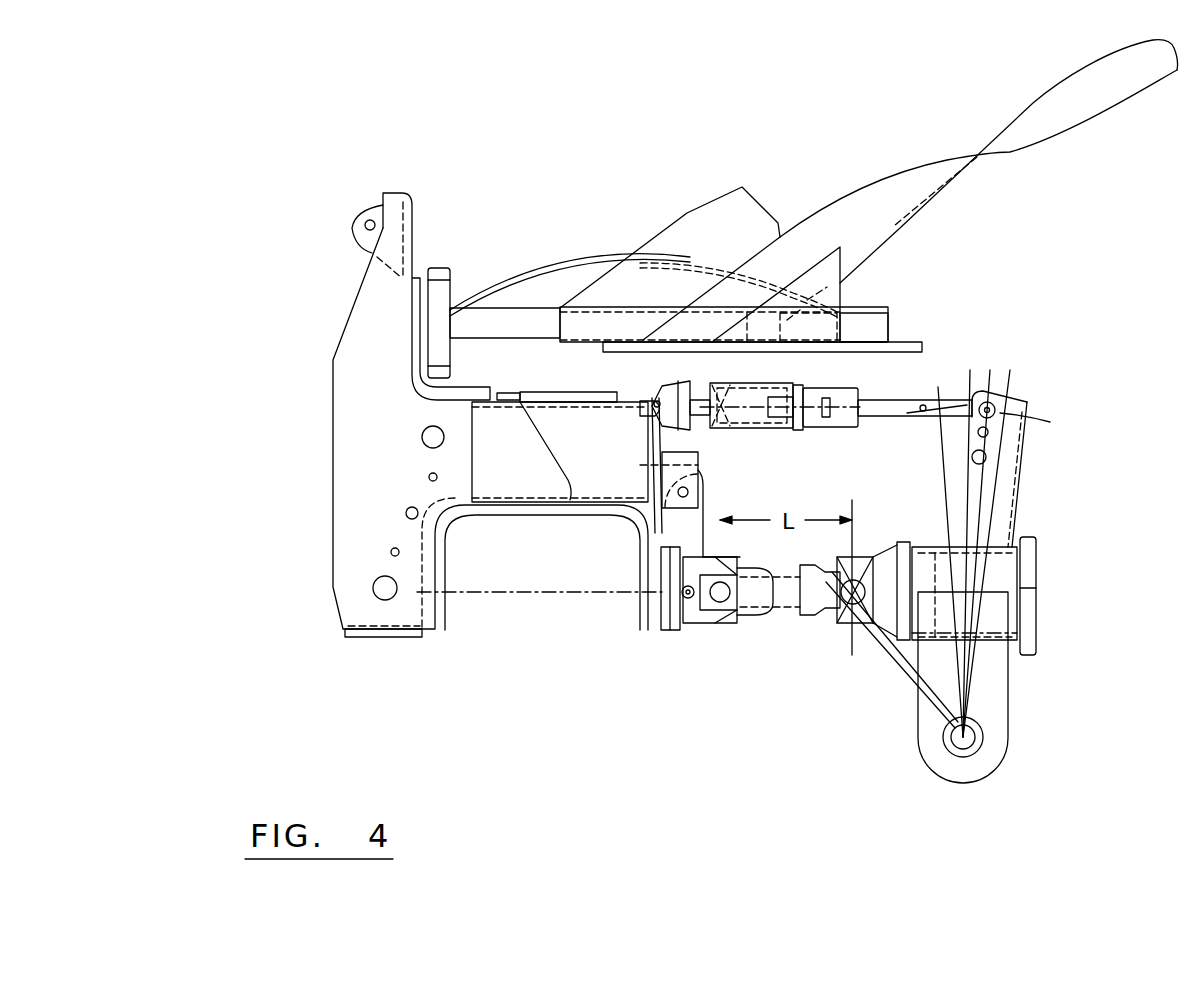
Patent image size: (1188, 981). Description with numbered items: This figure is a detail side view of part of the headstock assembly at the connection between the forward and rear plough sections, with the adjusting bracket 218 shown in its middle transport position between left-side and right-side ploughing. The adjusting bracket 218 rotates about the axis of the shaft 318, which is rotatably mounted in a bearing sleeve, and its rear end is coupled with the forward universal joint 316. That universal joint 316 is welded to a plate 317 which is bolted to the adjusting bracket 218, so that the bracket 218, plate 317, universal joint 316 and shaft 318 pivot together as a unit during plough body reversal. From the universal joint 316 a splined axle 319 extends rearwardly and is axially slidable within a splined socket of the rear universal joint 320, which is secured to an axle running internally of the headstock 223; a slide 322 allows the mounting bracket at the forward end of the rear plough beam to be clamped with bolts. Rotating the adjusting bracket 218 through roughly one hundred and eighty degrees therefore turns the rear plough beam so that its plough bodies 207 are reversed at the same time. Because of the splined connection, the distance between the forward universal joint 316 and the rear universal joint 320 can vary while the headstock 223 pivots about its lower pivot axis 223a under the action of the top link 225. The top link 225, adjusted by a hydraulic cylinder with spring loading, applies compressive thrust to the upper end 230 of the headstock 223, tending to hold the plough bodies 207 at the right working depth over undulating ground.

The plough bodies 207 is at (877, 207).
The adjusting bracket 218 is at (363, 522).
The headstock 223 is at (1013, 490).
The lower pivot axis 223a is at (970, 742).
The top link 225 is at (900, 400).
The upper end of the headstock 230 is at (1022, 397).
The universal joint 316 is at (698, 618).
The plate 317 is at (665, 620).
The shaft 318 is at (517, 595).
The splined axle 319 is at (788, 592).
The rear universal joint 320 is at (815, 595).
The slide 322 is at (1037, 557).